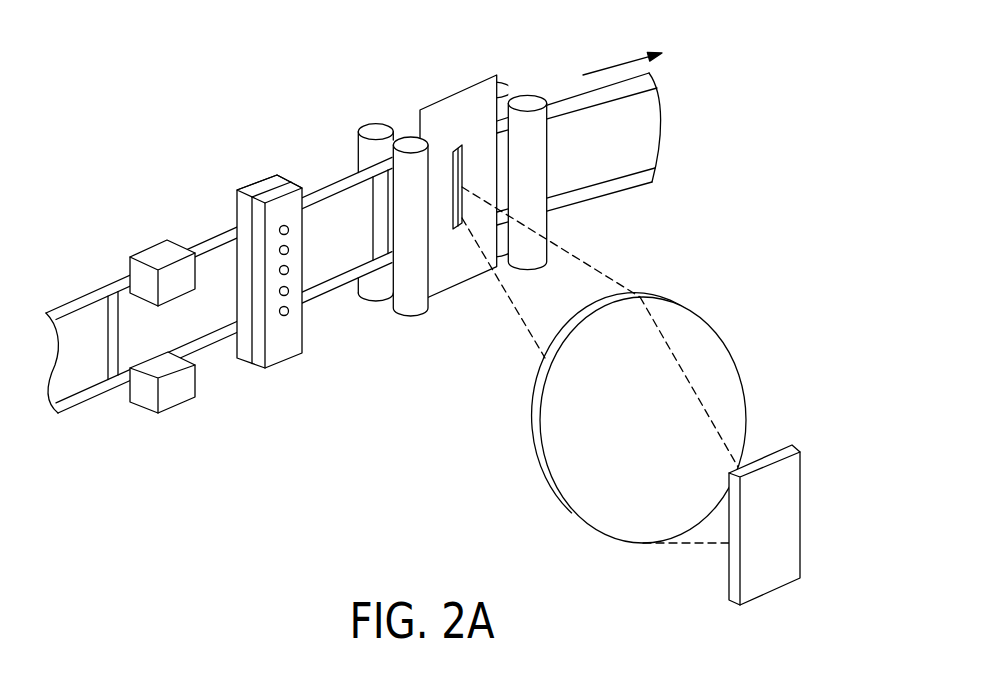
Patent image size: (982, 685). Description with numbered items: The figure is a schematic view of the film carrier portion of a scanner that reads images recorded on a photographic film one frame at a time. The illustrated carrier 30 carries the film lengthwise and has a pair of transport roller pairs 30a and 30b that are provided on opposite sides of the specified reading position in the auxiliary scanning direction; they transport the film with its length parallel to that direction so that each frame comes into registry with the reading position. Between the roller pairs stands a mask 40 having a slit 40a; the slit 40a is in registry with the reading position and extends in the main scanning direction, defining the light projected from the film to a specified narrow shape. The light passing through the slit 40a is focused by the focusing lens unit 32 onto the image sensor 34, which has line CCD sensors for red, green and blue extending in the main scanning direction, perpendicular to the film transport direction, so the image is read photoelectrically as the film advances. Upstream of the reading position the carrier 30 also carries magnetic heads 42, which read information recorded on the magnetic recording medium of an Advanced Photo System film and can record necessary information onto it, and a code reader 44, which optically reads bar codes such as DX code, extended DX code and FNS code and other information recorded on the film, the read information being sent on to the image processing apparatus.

The carrier 30 is at (384, 92).
The transport roller pair 30a is at (407, 297).
The transport roller pair 30b is at (528, 142).
The focusing lens unit 32 is at (707, 352).
The image sensor 34 is at (782, 505).
The mask 40 is at (457, 268).
The slit 40a is at (467, 150).
The magnetic heads 42 is at (163, 253).
The code reader 44 is at (267, 183).